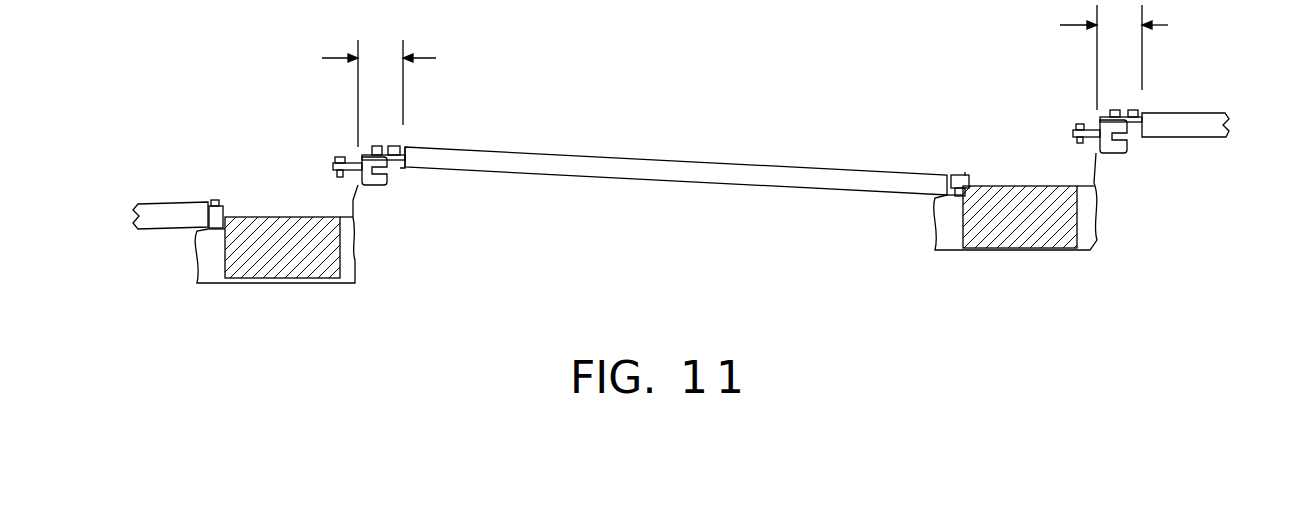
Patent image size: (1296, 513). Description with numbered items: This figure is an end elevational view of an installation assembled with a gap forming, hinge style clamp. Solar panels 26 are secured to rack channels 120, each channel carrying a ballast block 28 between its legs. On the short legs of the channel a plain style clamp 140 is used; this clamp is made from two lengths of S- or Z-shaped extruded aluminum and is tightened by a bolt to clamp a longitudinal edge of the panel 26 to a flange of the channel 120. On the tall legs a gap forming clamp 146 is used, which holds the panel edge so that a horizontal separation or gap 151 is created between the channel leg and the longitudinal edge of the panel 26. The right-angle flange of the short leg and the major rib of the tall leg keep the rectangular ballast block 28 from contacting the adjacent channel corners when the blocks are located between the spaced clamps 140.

The panel 26 is at (182, 203).
The insulation block 28 is at (282, 233).
The rack channel 120 is at (1097, 237).
The plain style clamp 140 is at (965, 172).
The gap forming clamp 146 is at (380, 187).
The gap 151 is at (774, 76).